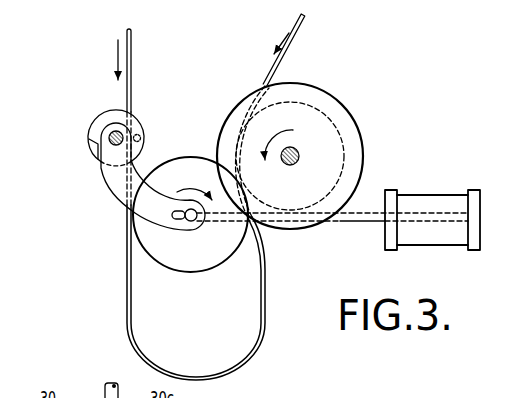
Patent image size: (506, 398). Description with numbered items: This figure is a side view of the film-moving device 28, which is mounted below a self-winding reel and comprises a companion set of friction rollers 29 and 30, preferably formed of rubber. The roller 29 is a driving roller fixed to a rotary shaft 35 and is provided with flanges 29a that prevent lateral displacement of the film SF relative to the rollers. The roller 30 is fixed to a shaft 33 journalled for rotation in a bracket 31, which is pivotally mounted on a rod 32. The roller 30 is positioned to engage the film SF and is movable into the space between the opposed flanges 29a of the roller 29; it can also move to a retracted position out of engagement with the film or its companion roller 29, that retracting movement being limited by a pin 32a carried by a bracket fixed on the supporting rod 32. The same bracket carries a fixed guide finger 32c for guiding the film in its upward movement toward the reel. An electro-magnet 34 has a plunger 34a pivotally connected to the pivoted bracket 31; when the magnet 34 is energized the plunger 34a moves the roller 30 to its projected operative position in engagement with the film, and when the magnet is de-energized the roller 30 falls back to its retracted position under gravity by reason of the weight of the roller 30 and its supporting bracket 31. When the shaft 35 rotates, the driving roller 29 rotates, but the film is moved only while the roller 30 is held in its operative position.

The film-moving device 28 is at (203, 139).
The roller 29 is at (328, 143).
The flanges 29a is at (335, 108).
The roller 30 is at (192, 277).
The bracket 31 is at (125, 192).
The rod 32 is at (110, 143).
The pin 32a is at (89, 146).
The guide finger 32c is at (141, 138).
The shaft 33 is at (186, 218).
The electro-magnet 34 is at (417, 203).
The plunger 34a is at (347, 222).
The rotary shaft 35 is at (298, 160).
The film SF is at (292, 55).